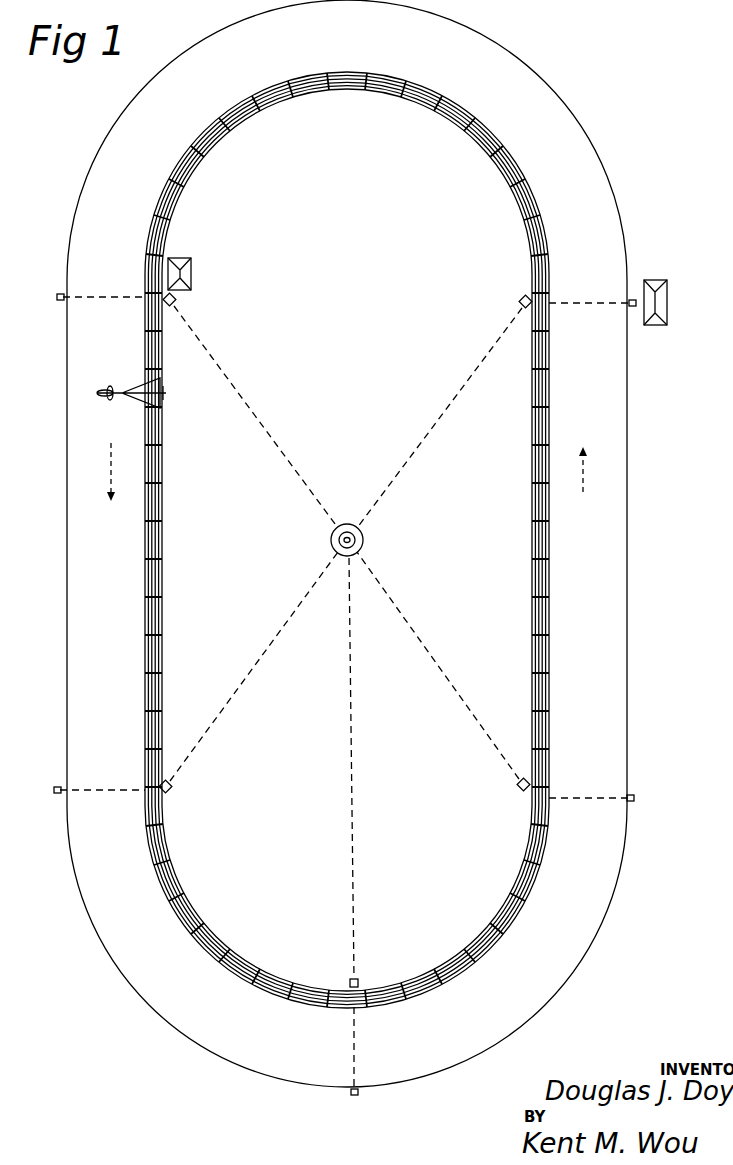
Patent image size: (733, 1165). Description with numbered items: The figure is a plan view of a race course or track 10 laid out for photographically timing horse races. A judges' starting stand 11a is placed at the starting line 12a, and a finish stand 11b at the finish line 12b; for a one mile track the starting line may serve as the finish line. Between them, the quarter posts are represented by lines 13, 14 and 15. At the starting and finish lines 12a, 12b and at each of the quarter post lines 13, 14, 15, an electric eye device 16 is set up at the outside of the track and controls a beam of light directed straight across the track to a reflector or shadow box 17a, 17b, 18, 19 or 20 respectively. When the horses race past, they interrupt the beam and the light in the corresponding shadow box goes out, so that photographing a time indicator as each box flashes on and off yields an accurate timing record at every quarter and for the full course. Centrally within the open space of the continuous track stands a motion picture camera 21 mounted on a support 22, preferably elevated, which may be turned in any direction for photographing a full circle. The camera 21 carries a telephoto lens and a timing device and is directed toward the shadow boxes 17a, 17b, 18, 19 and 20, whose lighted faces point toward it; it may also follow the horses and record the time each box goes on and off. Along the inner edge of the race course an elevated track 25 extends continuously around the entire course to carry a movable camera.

The race course or track 10 is at (594, 647).
The judges' starting stand 11a is at (196, 262).
The finish stand 11b is at (663, 280).
The starting line 12a is at (124, 302).
The finish line 12b is at (596, 310).
The quarter post line 13 is at (100, 796).
The quarter post line 14 is at (362, 1034).
The quarter post line 15 is at (578, 806).
The electric eye device 16 is at (56, 302).
The reflector or shadow box 17a is at (176, 310).
The reflector or shadow box 17b is at (516, 299).
The reflector or shadow box 18 is at (173, 793).
The reflector or shadow box 19 is at (350, 975).
The reflector or shadow box 20 is at (516, 791).
The camera 21 is at (344, 550).
The support 22 is at (366, 536).
The elevated track 25 is at (162, 519).